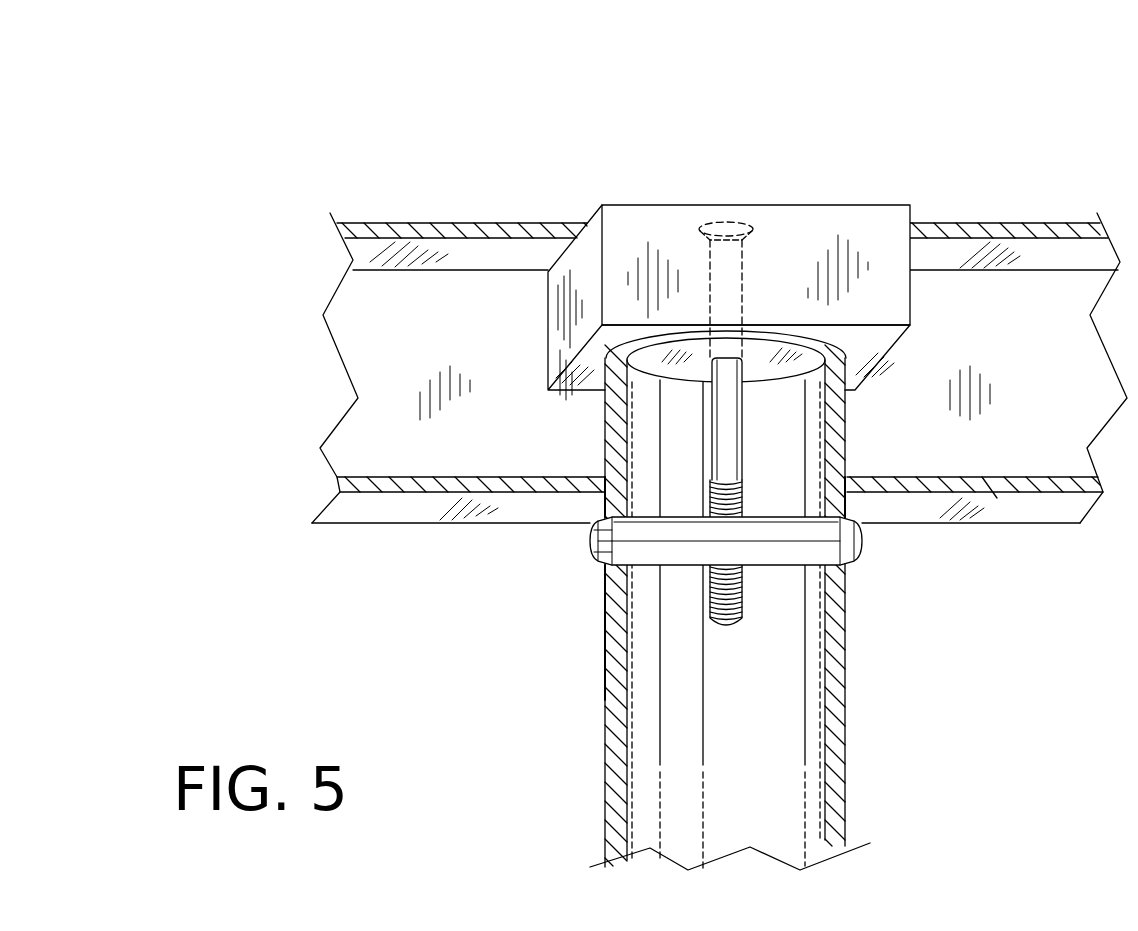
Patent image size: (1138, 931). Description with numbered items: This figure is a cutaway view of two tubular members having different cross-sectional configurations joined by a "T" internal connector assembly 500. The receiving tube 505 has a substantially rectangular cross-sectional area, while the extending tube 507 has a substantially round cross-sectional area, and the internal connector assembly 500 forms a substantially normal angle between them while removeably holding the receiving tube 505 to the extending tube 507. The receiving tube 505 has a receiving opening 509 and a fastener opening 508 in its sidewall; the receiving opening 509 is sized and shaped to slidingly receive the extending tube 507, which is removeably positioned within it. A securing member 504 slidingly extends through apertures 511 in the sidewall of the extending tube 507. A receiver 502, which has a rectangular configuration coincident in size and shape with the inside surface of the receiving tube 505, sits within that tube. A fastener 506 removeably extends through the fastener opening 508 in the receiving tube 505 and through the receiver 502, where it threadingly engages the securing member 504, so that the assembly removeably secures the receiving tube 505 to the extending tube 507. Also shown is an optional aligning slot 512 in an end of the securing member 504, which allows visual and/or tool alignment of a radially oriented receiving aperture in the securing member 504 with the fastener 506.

The internal connector assembly 500 is at (918, 157).
The receiver 502 is at (632, 223).
The securing member 504 is at (858, 540).
The receiving tube 505 is at (1037, 223).
The fastener 506 is at (738, 285).
The extending tube 507 is at (843, 813).
The fastener opening 508 is at (691, 226).
The receiving opening 509 is at (603, 492).
The apertures 511 is at (608, 587).
The aligning slot 512 is at (588, 538).